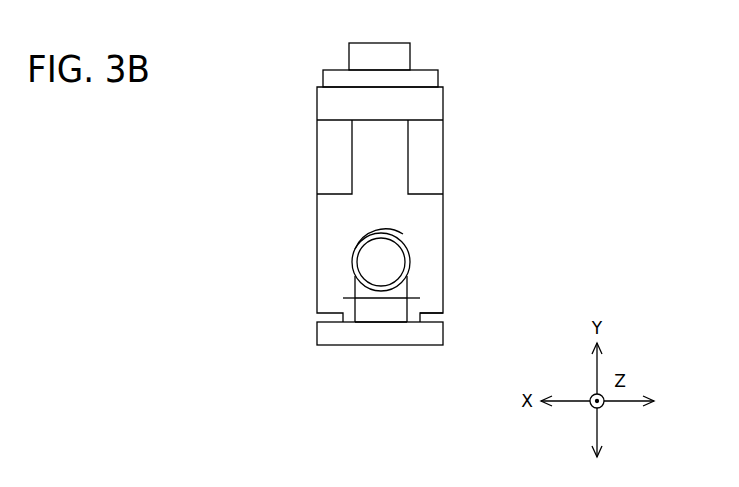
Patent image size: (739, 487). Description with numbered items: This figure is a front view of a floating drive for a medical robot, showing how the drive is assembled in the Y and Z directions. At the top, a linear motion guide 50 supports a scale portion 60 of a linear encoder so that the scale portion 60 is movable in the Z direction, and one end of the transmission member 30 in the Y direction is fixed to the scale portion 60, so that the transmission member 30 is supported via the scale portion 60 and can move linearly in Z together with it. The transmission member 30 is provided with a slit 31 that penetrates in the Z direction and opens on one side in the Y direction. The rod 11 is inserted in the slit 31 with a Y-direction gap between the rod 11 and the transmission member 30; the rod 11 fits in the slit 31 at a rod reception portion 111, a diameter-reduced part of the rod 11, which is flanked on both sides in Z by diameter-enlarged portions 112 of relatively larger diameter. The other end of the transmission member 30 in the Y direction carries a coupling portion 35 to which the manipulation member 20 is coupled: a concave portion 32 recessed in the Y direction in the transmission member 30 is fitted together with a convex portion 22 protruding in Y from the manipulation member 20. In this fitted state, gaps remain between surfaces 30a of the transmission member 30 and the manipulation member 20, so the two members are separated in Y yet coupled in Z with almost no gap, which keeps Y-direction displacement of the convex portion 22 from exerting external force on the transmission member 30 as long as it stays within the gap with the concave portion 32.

The linear motion guide 50 is at (400, 53).
The scale portion 60 is at (433, 100).
The transmission member 30 is at (432, 211).
The surfaces of the transmission member 30a is at (436, 322).
The slit 31 is at (400, 236).
The concave portion 32 is at (410, 283).
The rod 11 is at (370, 251).
The rod reception portion 111 is at (359, 249).
The diameter-enlarged portions 112 is at (354, 264).
The coupling portion 35 is at (314, 318).
The manipulation member 20 is at (429, 330).
The convex portion 22 is at (380, 312).